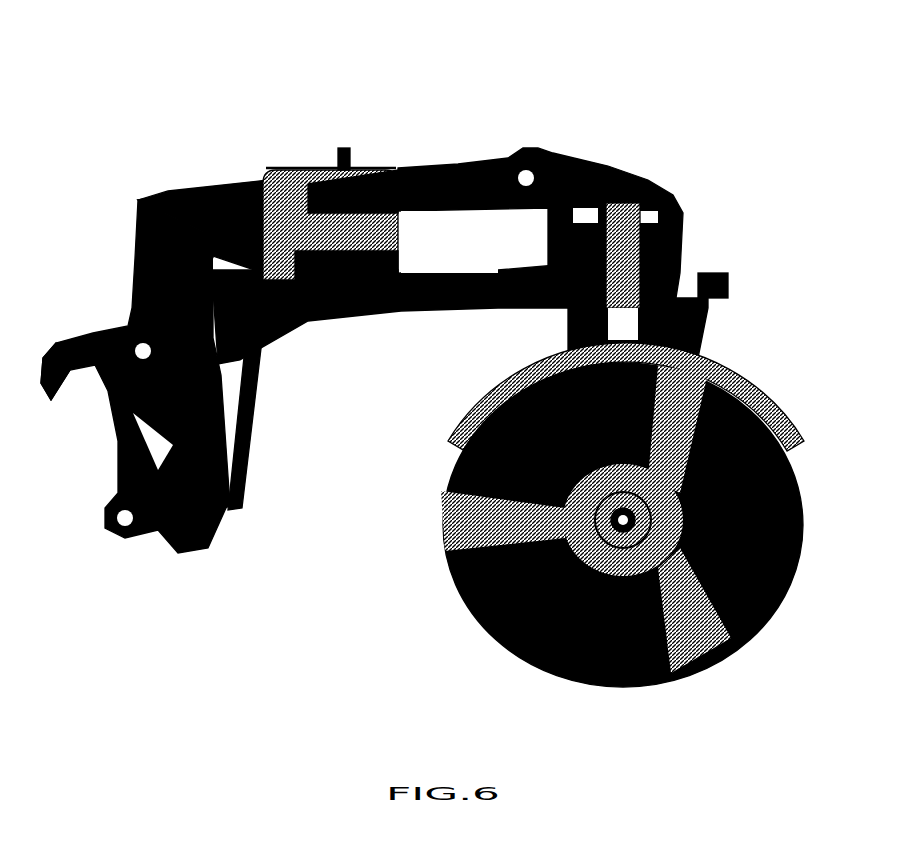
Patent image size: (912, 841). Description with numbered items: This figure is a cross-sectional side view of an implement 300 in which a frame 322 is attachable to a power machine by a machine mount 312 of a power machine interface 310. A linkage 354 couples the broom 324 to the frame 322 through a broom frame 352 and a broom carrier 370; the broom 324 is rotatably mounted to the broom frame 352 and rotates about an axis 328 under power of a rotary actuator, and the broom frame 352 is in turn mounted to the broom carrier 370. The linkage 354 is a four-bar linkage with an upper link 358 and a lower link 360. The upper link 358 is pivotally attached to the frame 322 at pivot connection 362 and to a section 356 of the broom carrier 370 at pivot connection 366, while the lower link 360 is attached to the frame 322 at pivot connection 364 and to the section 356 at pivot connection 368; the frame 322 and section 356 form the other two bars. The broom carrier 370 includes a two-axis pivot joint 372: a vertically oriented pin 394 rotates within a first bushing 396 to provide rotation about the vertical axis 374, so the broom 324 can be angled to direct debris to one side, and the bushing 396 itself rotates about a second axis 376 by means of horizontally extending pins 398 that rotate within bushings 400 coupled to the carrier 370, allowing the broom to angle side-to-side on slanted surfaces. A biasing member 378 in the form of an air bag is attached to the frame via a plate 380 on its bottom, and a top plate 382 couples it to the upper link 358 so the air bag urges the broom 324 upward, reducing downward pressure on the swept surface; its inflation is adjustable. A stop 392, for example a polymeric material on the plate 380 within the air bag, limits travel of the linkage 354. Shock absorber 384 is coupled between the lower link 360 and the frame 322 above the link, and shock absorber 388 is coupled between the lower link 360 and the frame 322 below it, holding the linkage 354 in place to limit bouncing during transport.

The implement 300 is at (772, 68).
The power machine interface 310 is at (58, 432).
The machine mount 312 is at (47, 383).
The frame 322 is at (138, 292).
The broom 324 is at (790, 500).
The axis 328 is at (610, 517).
The broom frame 352 is at (717, 350).
The linkage 354 is at (500, 118).
The section of broom carrier 356 is at (502, 216).
The upper link 358 is at (427, 170).
The lower link 360 is at (410, 317).
The pivot connection 362 is at (188, 197).
The pivot connection 364 is at (133, 340).
The pivot connection 366 is at (513, 173).
The pivot connection 368 is at (520, 283).
The broom carrier 370 is at (663, 255).
The 2-axis pivot joint 372 is at (692, 216).
The vertical axis 374 is at (617, 190).
The second axis 376 is at (670, 235).
The biasing member 378 is at (290, 177).
The plate 380 is at (340, 290).
The top plate 382 is at (360, 157).
The shock absorber 384 is at (140, 225).
The shock absorber 388 is at (257, 437).
The stop 392 is at (318, 255).
The pin 394 is at (630, 223).
The first bushing 396 is at (593, 240).
The pins 398 is at (650, 227).
The bushings 400 is at (703, 277).